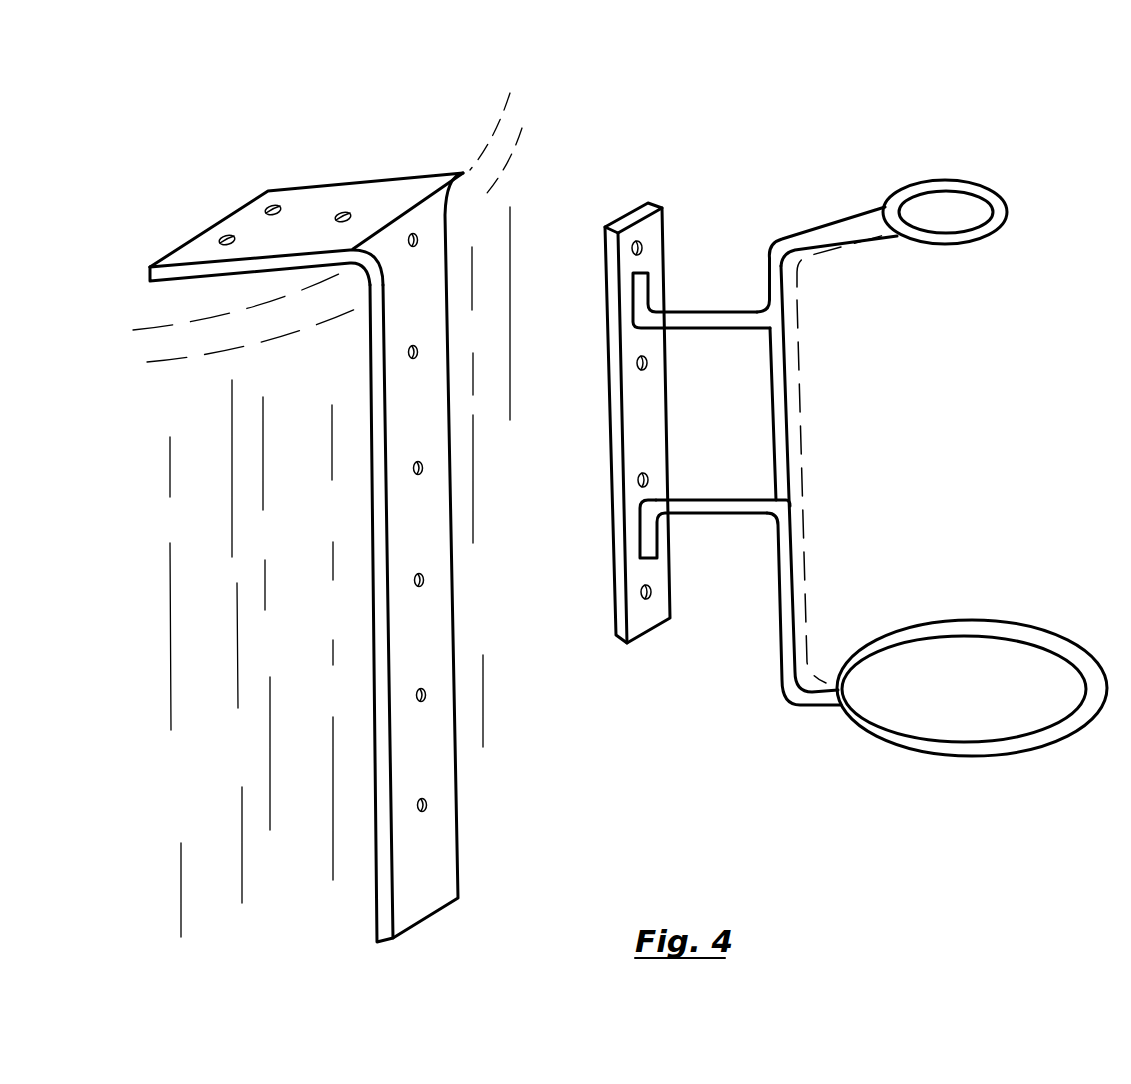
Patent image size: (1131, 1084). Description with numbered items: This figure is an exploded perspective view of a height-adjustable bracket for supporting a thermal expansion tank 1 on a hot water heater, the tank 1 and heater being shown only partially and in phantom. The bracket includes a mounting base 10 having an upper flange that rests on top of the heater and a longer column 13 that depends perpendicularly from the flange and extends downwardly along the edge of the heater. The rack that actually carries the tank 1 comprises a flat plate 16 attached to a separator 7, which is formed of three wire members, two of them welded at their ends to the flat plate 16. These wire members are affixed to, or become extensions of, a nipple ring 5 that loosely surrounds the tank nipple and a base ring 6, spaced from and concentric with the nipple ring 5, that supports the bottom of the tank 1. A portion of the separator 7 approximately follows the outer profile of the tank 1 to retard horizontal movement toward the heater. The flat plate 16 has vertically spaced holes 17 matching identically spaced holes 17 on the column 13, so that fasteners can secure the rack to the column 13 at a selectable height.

The thermal expansion tank 1 is at (870, 448).
The nipple ring 5 is at (940, 187).
The base ring 6 is at (943, 747).
The separator 7 is at (677, 320).
The mounting base 10 is at (363, 200).
The column 13 is at (417, 530).
The flat plate 16 is at (652, 233).
The holes 17 is at (644, 600).